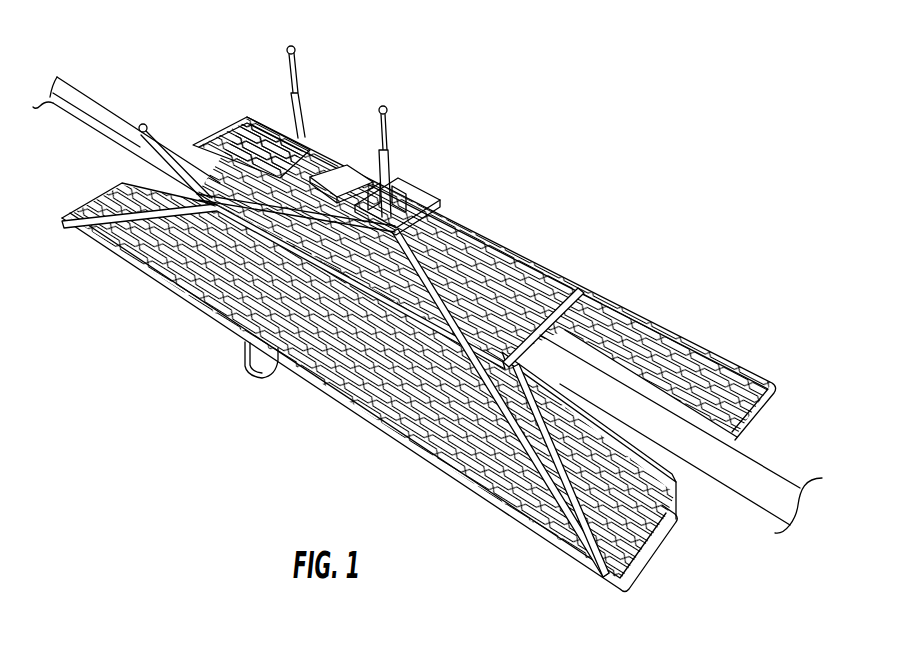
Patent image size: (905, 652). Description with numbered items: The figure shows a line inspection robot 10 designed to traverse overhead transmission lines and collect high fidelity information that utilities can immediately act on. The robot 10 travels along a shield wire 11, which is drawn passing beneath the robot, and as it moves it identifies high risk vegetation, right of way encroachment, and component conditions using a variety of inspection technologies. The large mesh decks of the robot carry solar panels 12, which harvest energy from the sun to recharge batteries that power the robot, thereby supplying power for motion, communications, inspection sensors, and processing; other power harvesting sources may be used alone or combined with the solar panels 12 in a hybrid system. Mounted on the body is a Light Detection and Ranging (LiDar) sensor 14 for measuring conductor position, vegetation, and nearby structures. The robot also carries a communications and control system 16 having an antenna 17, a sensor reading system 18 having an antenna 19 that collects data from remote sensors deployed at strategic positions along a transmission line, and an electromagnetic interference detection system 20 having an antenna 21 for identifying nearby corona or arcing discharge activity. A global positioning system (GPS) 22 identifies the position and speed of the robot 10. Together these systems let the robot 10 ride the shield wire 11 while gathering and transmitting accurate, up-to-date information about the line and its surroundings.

The inspection robot 10 is at (604, 136).
The shield wire 11 is at (745, 470).
The solar panels 12 is at (550, 280).
The Light Detection and Ranging (LiDar) sensor 14 is at (283, 375).
The communications and control system 16 is at (276, 125).
The antenna 17 is at (286, 79).
The sensor reading system 18 is at (190, 240).
The antenna 19 is at (153, 166).
The electromagnetic interference detection system 20 is at (400, 185).
The antenna 21 is at (390, 140).
The global positioning system (GPS) 22 is at (352, 170).